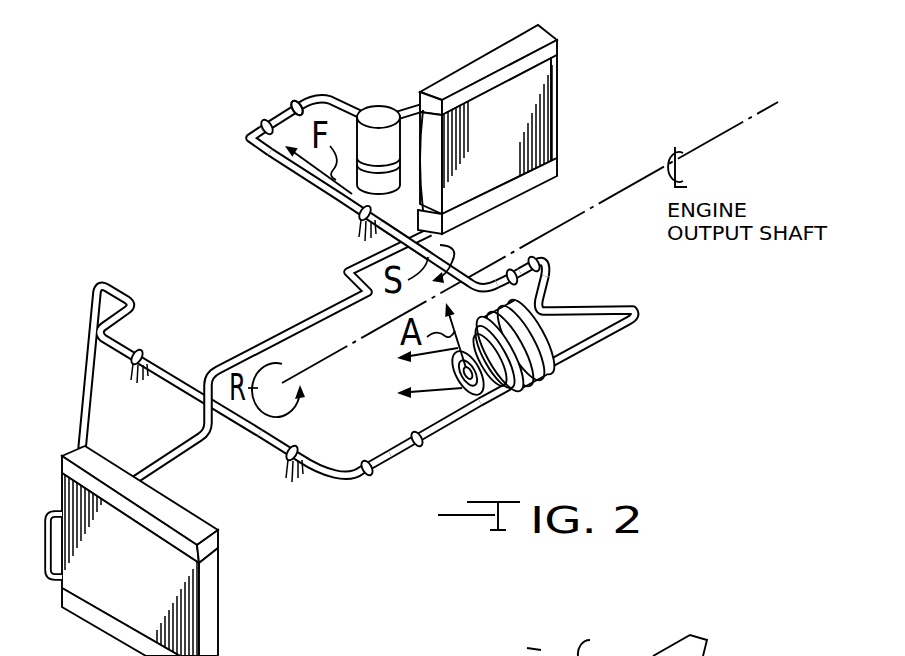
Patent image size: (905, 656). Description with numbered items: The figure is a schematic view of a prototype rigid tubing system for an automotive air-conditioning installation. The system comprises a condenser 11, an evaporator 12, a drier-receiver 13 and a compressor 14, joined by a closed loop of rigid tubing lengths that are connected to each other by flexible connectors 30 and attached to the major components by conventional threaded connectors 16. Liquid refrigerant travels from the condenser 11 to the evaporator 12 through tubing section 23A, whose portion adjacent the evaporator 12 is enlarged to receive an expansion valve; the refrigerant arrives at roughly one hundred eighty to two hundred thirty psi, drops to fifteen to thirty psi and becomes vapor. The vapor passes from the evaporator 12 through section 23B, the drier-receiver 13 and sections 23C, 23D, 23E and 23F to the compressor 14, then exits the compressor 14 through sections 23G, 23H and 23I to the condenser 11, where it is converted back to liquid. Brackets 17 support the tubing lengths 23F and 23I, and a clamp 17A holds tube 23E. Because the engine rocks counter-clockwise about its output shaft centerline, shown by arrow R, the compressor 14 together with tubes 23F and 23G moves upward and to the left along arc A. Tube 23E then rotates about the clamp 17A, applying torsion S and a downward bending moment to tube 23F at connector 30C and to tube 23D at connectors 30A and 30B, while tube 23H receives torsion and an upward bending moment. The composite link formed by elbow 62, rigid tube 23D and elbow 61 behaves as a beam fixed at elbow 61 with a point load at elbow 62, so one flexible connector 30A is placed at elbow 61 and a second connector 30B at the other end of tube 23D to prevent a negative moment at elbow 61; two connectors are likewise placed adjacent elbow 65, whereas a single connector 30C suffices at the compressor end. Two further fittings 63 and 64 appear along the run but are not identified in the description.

The condenser 11 is at (208, 607).
The evaporator 12 is at (547, 27).
The drier-receiver 13 is at (390, 100).
The compressor 14 is at (557, 378).
The threaded connectors 16 is at (448, 148).
The brackets 17 is at (139, 352).
The clamp 17A is at (357, 222).
The tubing section 23A is at (254, 350).
The tubing section 23B is at (418, 106).
The tubing section 23C is at (327, 93).
The rigid tube 23D is at (280, 110).
The rigid tube 23E is at (300, 187).
The rigid tube 23F is at (549, 287).
The tubing section 23G is at (598, 338).
The rigid tube 23H is at (400, 458).
The tubing section 23I is at (258, 438).
The flexible connectors 30 is at (422, 443).
The flexible connector 30A is at (300, 98).
The flexible connector 30B is at (260, 121).
The flexible connector 30C is at (540, 244).
The elbow 61 is at (313, 96).
The elbow 62 is at (243, 142).
The elbow 63 is at (550, 264).
The fitting 64 is at (488, 276).
The elbow 65 is at (343, 484).